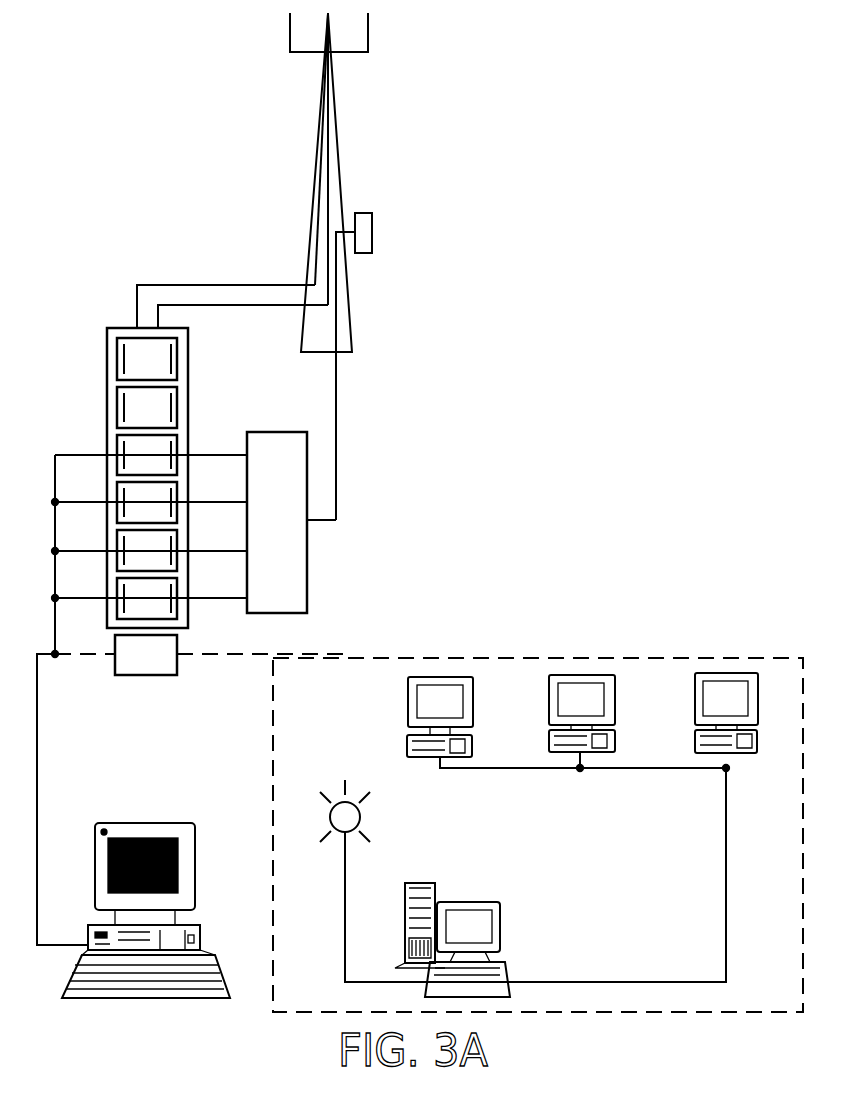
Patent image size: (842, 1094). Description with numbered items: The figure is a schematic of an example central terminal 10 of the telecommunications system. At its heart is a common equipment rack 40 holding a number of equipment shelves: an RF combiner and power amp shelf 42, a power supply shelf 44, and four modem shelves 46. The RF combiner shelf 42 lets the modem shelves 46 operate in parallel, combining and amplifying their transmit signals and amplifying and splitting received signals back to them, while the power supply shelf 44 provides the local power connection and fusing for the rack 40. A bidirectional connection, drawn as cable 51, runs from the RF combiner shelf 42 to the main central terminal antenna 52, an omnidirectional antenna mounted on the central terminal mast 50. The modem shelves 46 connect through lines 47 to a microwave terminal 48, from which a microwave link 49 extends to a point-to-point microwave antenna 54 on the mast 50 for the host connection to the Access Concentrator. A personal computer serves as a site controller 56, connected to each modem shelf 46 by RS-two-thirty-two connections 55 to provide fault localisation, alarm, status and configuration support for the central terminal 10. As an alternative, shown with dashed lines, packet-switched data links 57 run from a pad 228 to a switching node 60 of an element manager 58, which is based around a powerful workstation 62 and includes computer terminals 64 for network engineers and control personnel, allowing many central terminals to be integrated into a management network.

The central terminal 10 is at (411, 476).
The common equipment rack 40 is at (189, 404).
The RF combiner and power amp shelf 42 is at (117, 359).
The power supply shelf 44 is at (117, 407).
The modem shelf 46 is at (117, 450).
The lines 47 is at (228, 600).
The microwave terminal 48 is at (266, 571).
The microwave link 49 is at (337, 413).
The central terminal mast 50 is at (352, 291).
The cable 51 is at (263, 284).
The main central terminal antenna 52 is at (370, 33).
The point-to-point microwave antenna 54 is at (373, 234).
The RS232 connections 55 is at (38, 790).
The site controller 56 is at (200, 938).
The X.25 links 57 is at (334, 652).
The element manager 58 is at (432, 656).
The switching node 60 is at (362, 820).
The workstation 62 is at (405, 907).
The computer terminals 64 is at (475, 700).
The pad 228 is at (165, 677).